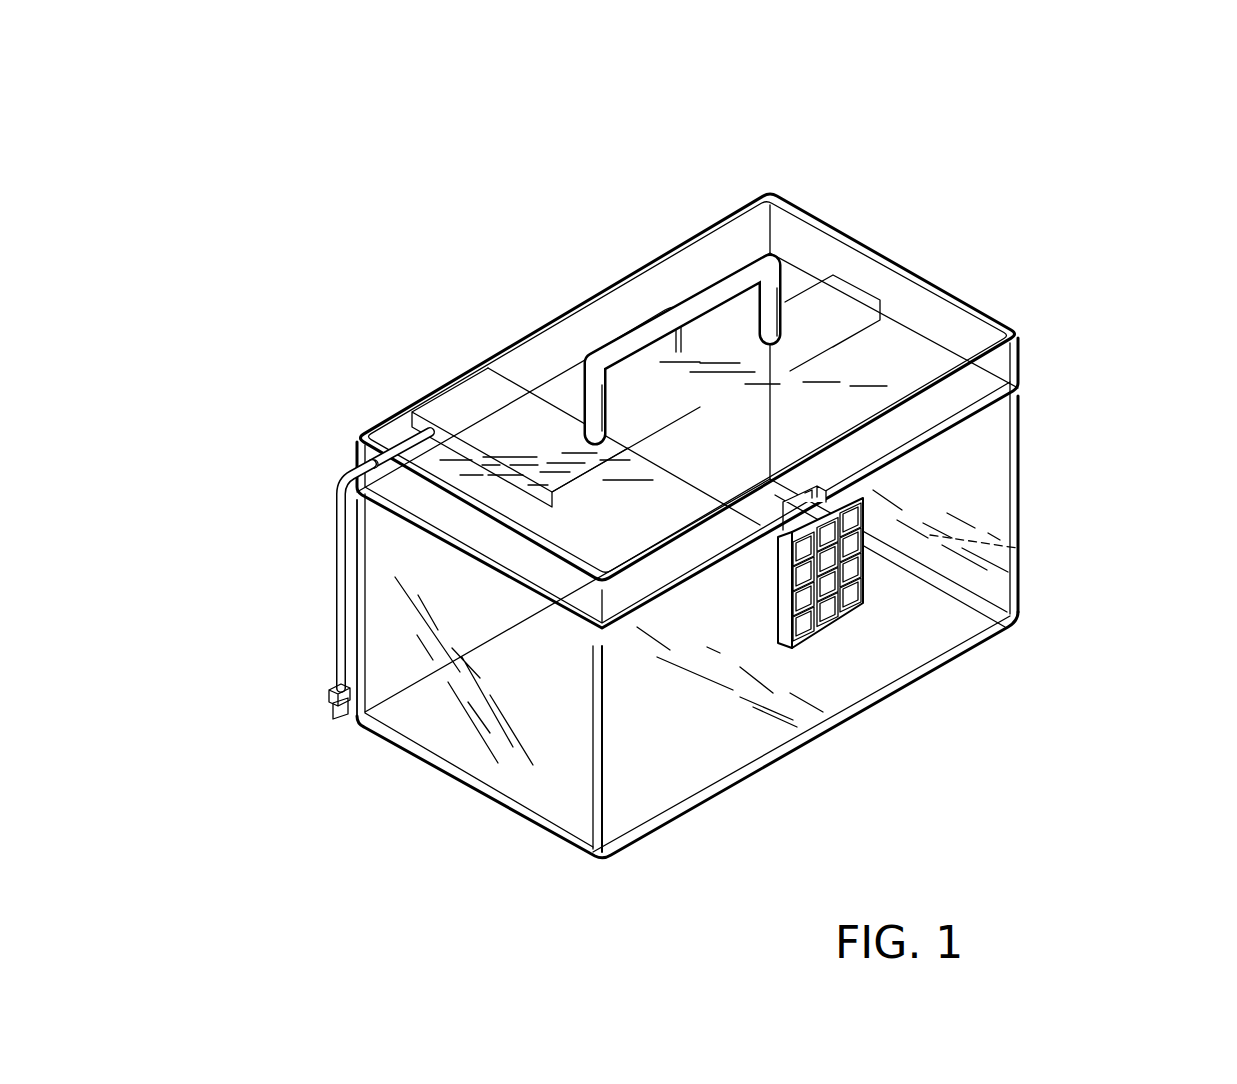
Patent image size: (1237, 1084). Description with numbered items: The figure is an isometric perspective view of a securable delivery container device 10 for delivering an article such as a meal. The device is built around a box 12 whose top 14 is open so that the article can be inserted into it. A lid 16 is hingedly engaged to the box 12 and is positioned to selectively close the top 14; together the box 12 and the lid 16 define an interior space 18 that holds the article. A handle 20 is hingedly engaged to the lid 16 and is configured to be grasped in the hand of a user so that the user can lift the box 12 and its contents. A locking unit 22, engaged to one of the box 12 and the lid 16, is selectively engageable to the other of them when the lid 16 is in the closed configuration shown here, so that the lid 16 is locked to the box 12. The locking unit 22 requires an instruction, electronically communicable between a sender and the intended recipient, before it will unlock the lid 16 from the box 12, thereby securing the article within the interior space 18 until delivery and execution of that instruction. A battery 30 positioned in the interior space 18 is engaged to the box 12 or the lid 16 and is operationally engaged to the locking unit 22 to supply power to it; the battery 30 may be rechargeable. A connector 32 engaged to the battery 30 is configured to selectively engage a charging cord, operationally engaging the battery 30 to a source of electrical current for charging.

The securable delivery container device 10 is at (1020, 160).
The box 12 is at (1018, 497).
The top 14 is at (988, 410).
The lid 16 is at (933, 287).
The interior space 18 is at (1000, 548).
The handle 20 is at (722, 288).
The locking unit 22 is at (781, 598).
The battery 30 is at (505, 433).
The connector 32 is at (338, 555).